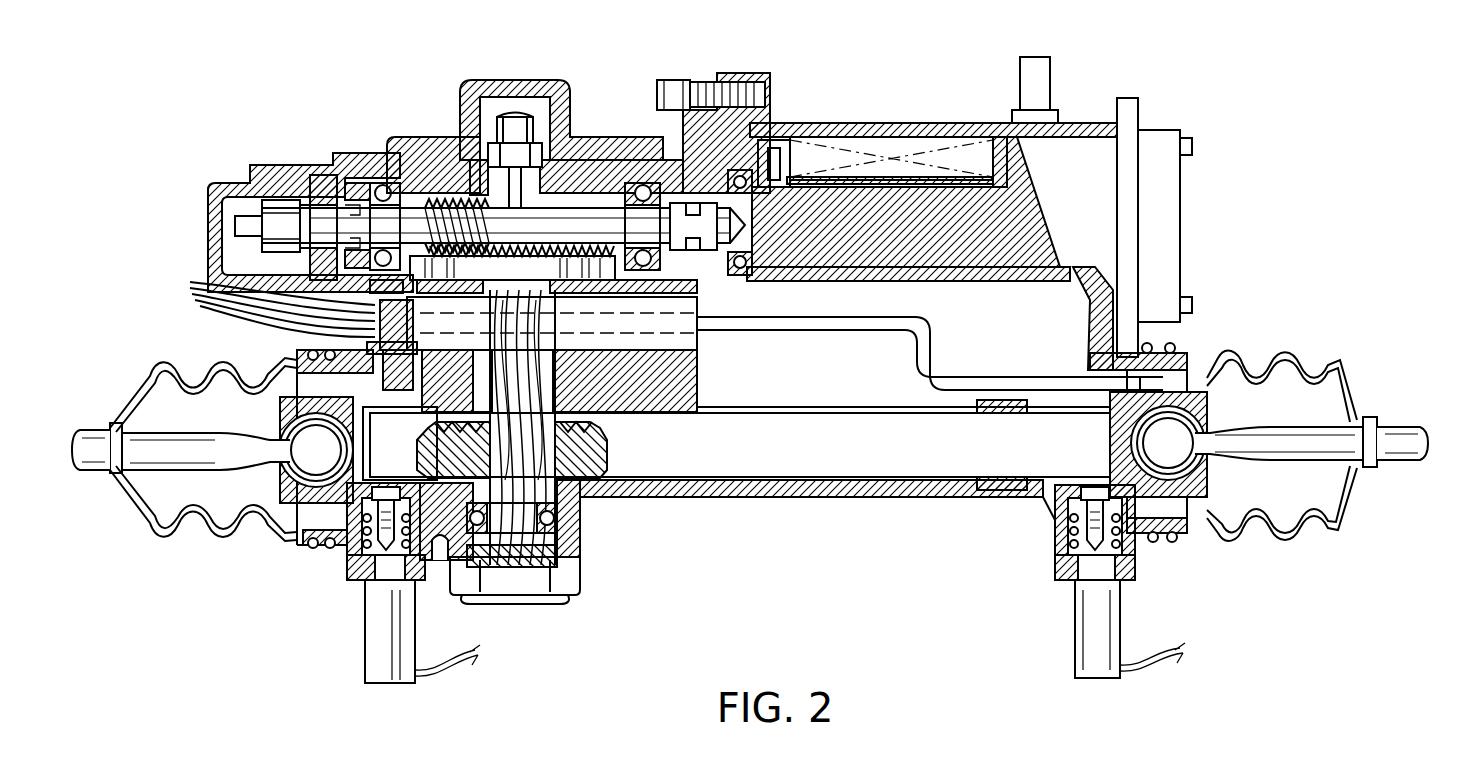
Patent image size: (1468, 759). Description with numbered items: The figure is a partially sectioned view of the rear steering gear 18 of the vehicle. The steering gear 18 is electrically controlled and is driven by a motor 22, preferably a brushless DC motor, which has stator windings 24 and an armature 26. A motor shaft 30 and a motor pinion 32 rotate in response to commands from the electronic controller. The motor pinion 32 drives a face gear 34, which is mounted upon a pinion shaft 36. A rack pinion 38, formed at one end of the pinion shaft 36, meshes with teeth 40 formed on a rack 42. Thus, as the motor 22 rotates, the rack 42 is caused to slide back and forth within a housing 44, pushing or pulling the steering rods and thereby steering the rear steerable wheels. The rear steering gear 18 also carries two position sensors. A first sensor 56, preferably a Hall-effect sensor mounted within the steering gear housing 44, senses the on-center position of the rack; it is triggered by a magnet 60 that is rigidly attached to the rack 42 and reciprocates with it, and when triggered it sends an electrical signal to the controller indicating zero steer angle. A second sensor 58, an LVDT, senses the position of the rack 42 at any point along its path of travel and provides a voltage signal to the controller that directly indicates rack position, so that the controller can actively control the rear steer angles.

The rear steering gear 18 is at (688, 505).
The motor 22 is at (1180, 217).
The stator windings 24 is at (897, 140).
The armature 26 is at (840, 187).
The motor shaft 30 is at (585, 218).
The motor pinion 32 is at (420, 152).
The face gear 34 is at (410, 247).
The pinion shaft 36 is at (533, 370).
The rack pinion 38 is at (533, 490).
The teeth 40 is at (593, 436).
The rack 42 is at (367, 490).
The housing 44 is at (1177, 380).
The first sensor 56 is at (280, 352).
The second sensor 58 is at (907, 293).
The magnet 60 is at (285, 400).